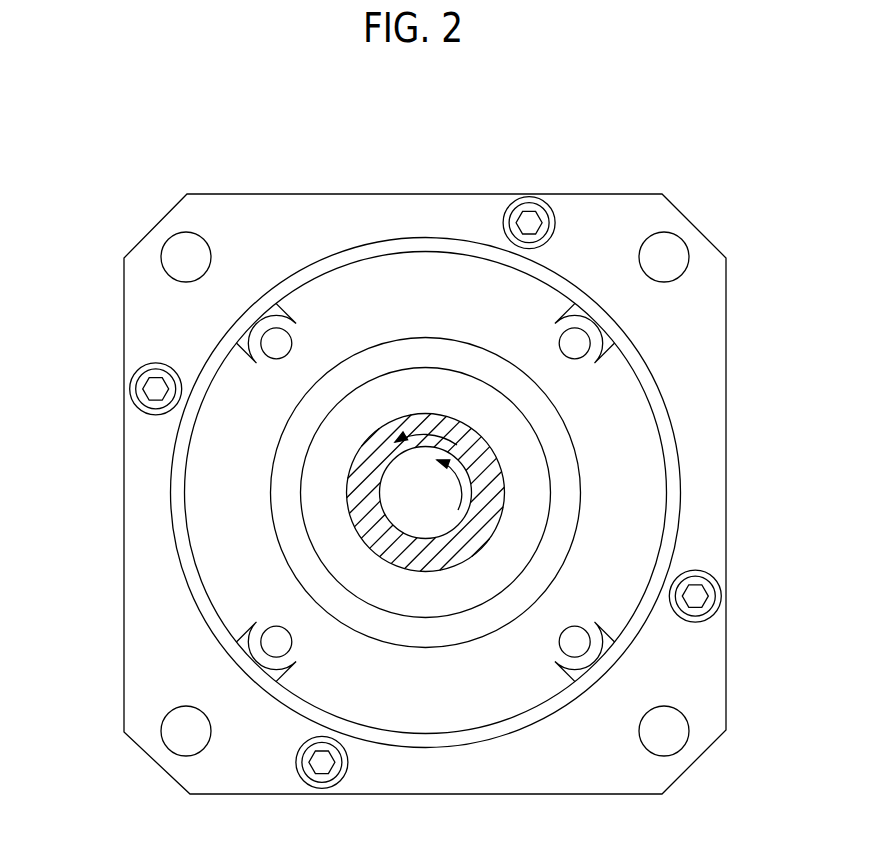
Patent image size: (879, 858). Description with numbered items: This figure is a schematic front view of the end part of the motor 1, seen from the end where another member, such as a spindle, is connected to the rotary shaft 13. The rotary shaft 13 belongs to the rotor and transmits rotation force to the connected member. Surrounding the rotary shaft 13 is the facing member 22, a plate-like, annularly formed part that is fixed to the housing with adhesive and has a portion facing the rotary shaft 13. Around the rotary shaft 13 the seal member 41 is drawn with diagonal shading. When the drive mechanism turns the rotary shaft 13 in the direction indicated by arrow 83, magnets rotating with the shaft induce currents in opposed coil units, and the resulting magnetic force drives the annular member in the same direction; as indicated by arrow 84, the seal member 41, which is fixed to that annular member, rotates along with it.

The motor 1 is at (598, 172).
The rotary shaft 13 is at (407, 487).
The facing member 22 is at (340, 541).
The seal member 41 is at (373, 455).
The arrow 83 is at (493, 453).
The arrow 84 is at (452, 440).